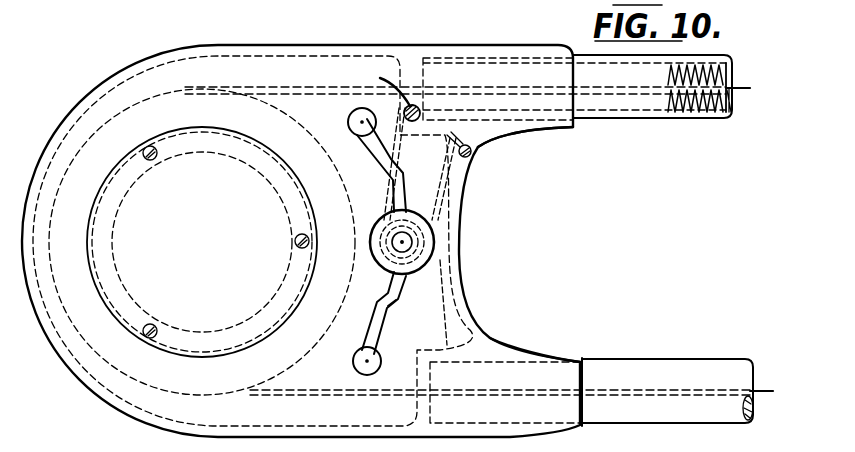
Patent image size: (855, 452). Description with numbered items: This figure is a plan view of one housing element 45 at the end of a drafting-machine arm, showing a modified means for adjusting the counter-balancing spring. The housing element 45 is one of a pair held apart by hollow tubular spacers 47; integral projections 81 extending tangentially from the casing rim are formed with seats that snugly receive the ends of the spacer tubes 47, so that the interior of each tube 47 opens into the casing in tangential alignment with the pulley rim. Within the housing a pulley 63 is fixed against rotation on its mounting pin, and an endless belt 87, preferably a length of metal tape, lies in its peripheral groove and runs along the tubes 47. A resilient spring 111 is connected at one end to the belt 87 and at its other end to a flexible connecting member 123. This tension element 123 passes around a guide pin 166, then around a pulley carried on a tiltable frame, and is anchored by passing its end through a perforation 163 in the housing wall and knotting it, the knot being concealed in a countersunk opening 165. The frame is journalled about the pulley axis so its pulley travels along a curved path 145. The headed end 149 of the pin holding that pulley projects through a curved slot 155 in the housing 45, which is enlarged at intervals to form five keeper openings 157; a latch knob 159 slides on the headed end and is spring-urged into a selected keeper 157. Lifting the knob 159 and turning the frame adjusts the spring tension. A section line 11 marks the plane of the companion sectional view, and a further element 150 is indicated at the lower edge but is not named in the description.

The section line 11 is at (12, 243).
The housing element 45 is at (121, 76).
The hollow tubular spacer 47 is at (637, 118).
The pulley 63 is at (86, 114).
The projection 81 is at (546, 128).
The flexible driving means 87 is at (744, 92).
The resilient spring 111 is at (717, 72).
The flexible connecting member 123 is at (468, 179).
The curved path 145 is at (408, 203).
The headed end 149 is at (404, 242).
The gear housing 150 is at (277, 270).
The curved slot 155 is at (380, 336).
The latched adjusting position 157 is at (402, 310).
The latch knob 159 is at (422, 257).
The perforation 163 is at (455, 135).
The countersunk opening 165 is at (472, 153).
The guide pin 166 is at (383, 92).